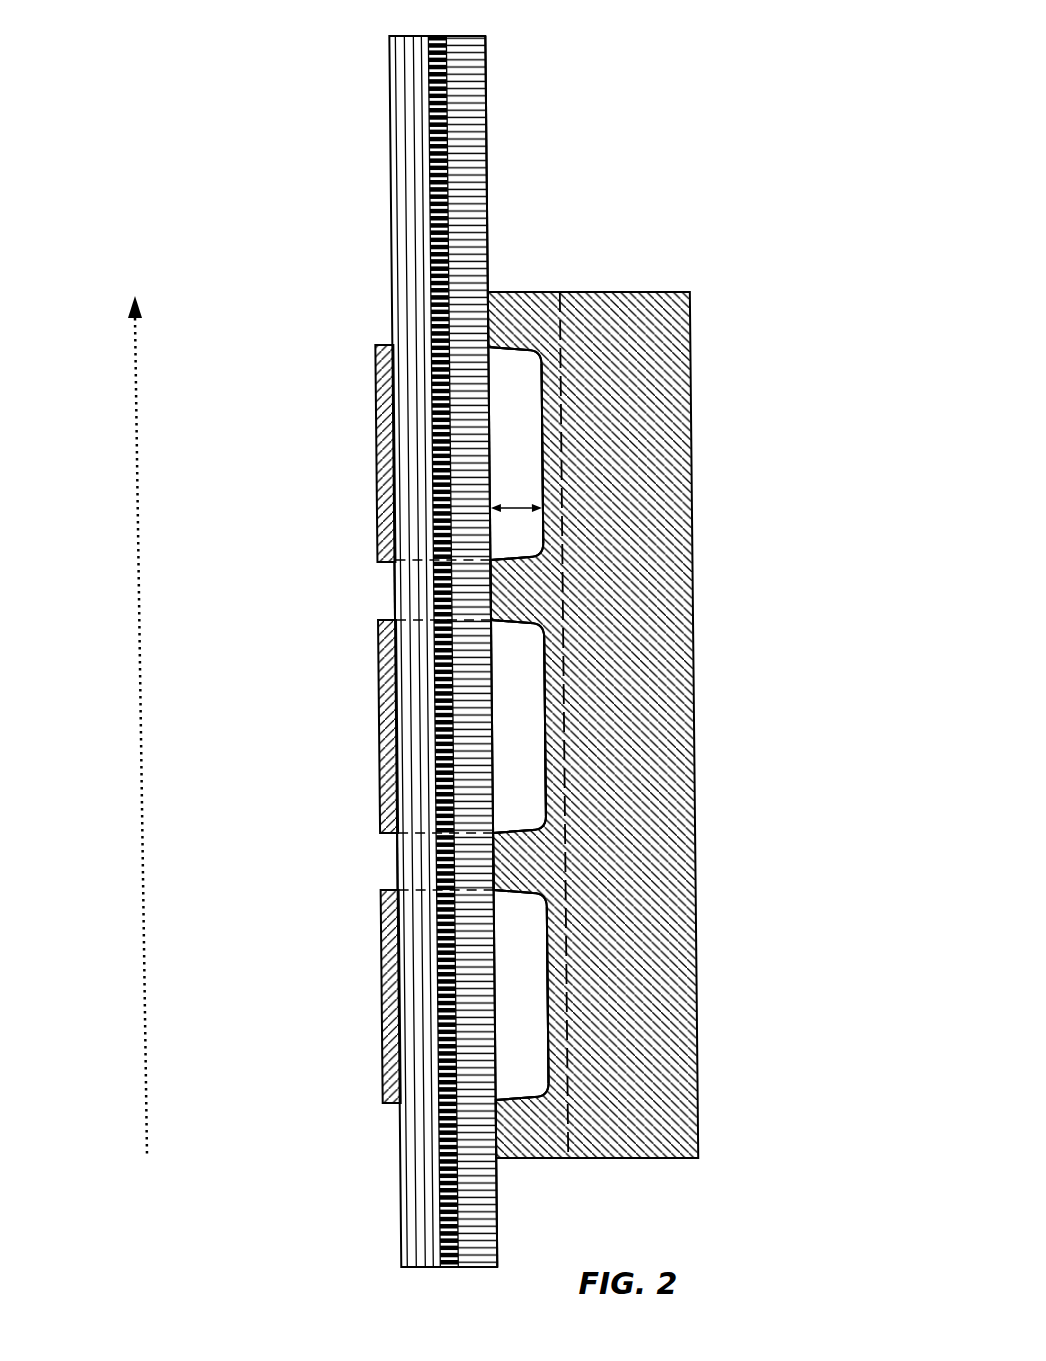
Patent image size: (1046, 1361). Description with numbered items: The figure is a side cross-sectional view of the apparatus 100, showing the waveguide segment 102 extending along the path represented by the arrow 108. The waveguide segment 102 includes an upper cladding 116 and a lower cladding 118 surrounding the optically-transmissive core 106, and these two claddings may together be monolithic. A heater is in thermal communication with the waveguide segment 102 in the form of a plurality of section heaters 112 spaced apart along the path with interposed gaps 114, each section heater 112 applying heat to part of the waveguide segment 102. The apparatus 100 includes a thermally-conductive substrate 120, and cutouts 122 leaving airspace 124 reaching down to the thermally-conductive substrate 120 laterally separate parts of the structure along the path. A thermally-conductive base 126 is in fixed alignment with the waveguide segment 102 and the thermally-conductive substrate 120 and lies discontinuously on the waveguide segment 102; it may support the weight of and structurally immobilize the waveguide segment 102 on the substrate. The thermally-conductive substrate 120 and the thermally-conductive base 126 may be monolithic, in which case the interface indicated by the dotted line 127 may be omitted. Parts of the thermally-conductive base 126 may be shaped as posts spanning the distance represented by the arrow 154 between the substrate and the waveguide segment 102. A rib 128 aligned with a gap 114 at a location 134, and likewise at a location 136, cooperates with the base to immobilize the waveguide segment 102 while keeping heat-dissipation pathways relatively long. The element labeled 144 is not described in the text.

The apparatus 100 is at (694, 171).
The waveguide segment 102 is at (389, 301).
The optically-transmissive core 106 is at (452, 144).
The arrow 108 is at (136, 440).
The section heaters 112 is at (377, 480).
The gaps 114 is at (366, 586).
The upper cladding 116 is at (413, 162).
The lower cladding 118 is at (482, 268).
The thermally-conductive substrate 120 is at (612, 685).
The cutouts 122 is at (496, 456).
The airspace 124 is at (515, 536).
The thermally-conductive base 126 is at (504, 333).
The dotted line 127 is at (562, 463).
The rib 128 is at (476, 587).
The location 134 is at (397, 880).
The location 136 is at (393, 604).
The strip outer surface 144 is at (504, 196).
The arrow 154 is at (517, 511).